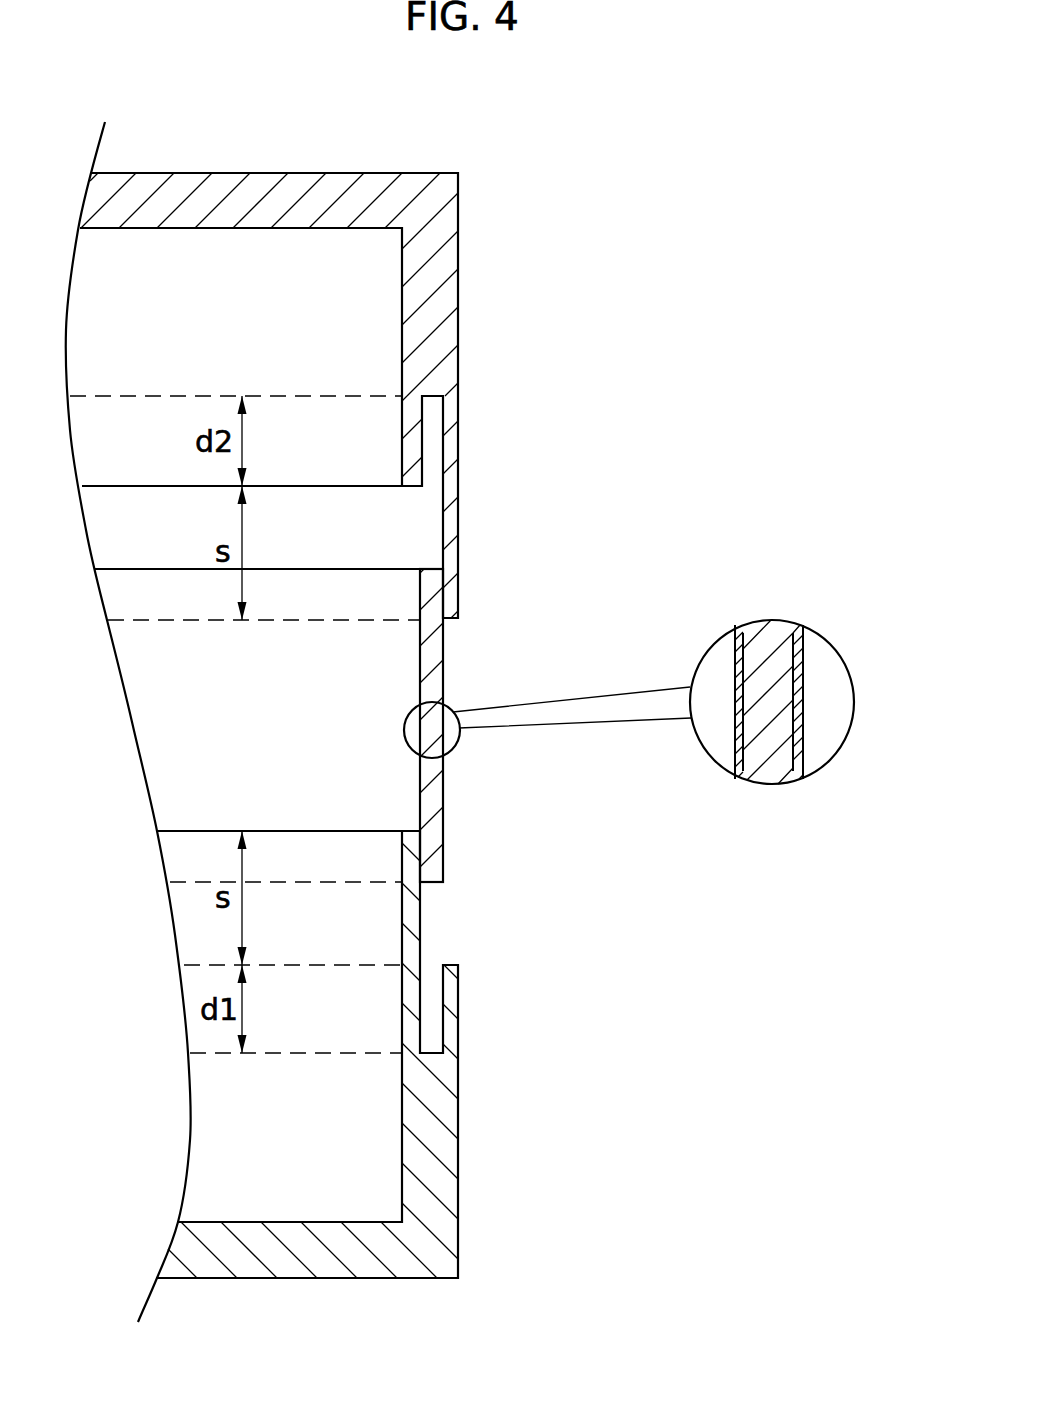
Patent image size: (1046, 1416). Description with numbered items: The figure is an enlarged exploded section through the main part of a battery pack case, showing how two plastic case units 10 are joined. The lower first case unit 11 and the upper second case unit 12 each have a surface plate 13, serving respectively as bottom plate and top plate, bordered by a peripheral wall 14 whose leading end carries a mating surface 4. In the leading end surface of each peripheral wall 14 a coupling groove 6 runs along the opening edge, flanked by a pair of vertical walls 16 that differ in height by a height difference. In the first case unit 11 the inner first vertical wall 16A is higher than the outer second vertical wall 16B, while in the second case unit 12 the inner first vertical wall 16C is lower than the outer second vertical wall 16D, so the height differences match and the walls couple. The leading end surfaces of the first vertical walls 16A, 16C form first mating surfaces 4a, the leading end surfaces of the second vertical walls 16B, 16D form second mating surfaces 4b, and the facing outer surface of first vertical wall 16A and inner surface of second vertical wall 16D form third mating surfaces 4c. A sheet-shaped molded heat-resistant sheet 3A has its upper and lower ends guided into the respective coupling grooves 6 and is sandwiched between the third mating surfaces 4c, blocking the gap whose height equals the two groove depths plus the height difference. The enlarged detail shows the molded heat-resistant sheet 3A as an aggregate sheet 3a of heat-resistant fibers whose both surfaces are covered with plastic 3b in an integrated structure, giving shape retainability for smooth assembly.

The molded heat-resistant sheet 3A is at (631, 692).
The aggregate sheet 3a is at (768, 640).
The plastic 3b is at (858, 556).
The mating surface 4 is at (516, 723).
The first mating surface 4a is at (416, 501).
The second mating surface 4b is at (512, 792).
The third mating surface 4c is at (429, 546).
The coupling groove 6 is at (451, 392).
The case unit 10 is at (443, 722).
The first case unit 11 is at (558, 1162).
The second case unit 12 is at (556, 185).
The surface plate 13 is at (245, 190).
The peripheral wall 14 is at (433, 277).
The vertical wall 16 is at (512, 700).
The first vertical wall 16A is at (411, 946).
The second vertical wall 16B is at (453, 998).
The first vertical wall 16C is at (411, 441).
The second vertical wall 16D is at (452, 498).